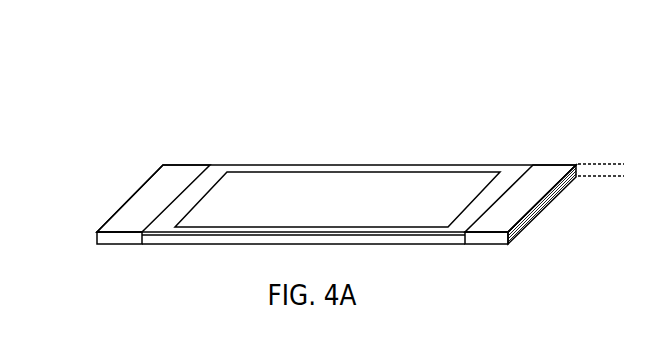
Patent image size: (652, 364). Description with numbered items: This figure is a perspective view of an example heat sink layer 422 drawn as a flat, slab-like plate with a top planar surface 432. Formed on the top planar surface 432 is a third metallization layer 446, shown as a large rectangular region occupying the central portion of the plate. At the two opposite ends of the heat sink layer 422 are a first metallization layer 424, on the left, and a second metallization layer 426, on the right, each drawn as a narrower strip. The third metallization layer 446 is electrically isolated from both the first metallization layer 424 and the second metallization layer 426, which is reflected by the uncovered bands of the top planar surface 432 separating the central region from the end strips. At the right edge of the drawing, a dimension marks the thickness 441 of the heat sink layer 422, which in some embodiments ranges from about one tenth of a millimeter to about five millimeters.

The heat sink layer 422 is at (357, 112).
The first metallization layer 424 is at (155, 173).
The second metallization layer 426 is at (524, 229).
The top planar surface 432 is at (508, 174).
The thickness 441 is at (610, 206).
The third metallization layer 446 is at (241, 180).